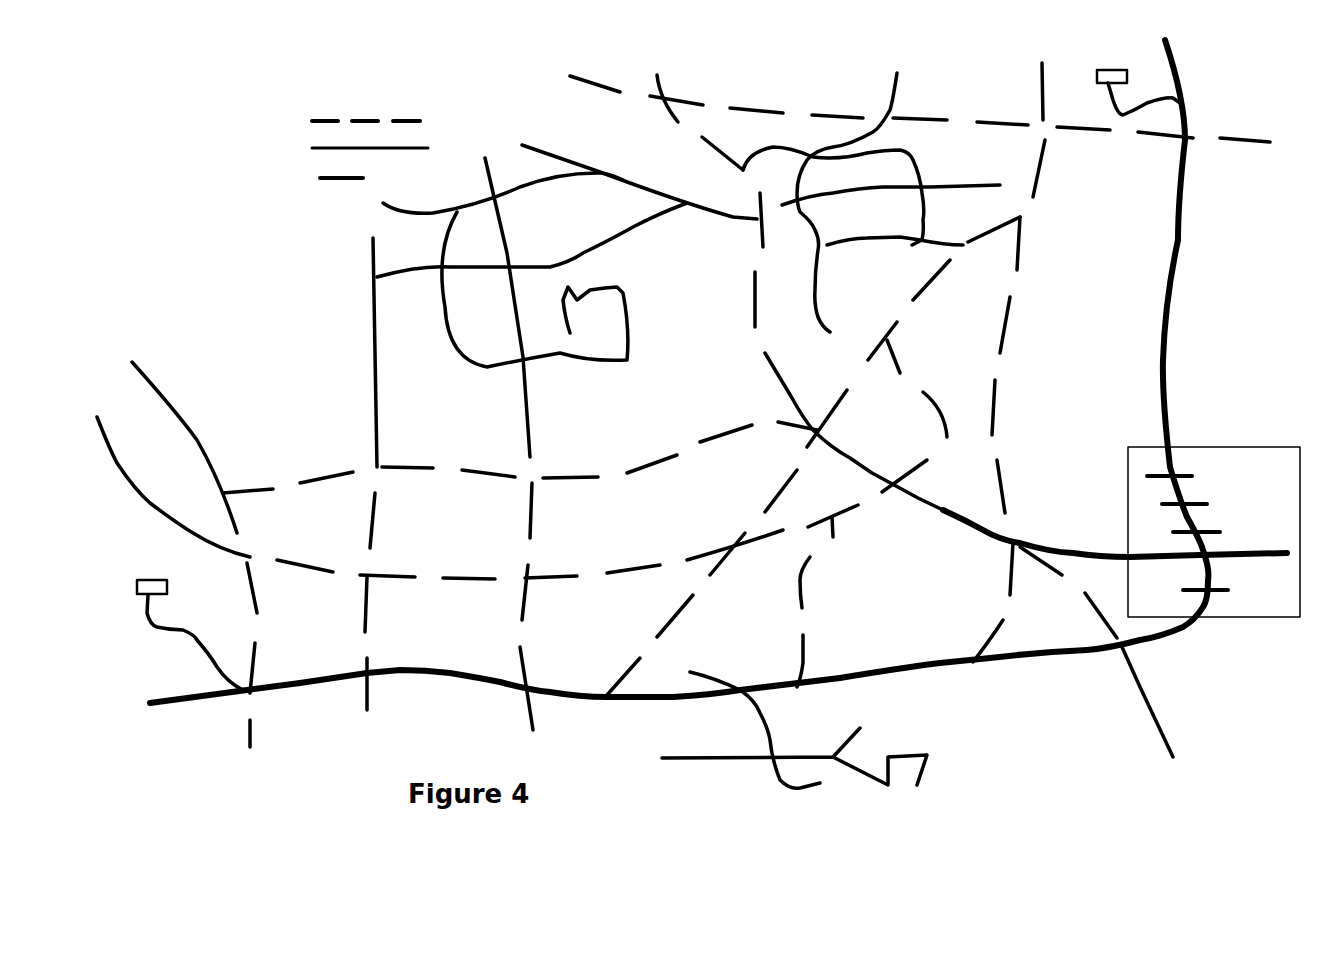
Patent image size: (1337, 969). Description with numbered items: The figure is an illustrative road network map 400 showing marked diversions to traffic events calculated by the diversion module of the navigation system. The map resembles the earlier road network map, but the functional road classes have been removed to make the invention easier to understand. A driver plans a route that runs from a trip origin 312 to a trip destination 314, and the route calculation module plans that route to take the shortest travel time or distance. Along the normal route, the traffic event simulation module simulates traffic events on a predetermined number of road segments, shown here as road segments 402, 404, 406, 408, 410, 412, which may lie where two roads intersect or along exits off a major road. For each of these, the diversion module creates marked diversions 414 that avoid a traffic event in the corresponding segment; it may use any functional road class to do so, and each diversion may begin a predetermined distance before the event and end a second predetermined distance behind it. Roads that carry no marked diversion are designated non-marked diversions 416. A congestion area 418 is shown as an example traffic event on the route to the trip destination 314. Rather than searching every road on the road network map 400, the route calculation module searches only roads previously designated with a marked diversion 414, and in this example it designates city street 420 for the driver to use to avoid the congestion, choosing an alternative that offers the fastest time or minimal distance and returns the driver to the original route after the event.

The road network map 400 is at (452, 97).
The trip origin 312 is at (167, 595).
The trip destination 314 is at (1103, 85).
The road segment 402 is at (282, 688).
The road segment 404 is at (413, 675).
The road segment 406 is at (572, 697).
The road segment 408 is at (683, 700).
The road segment 410 is at (895, 675).
The road segment 412 is at (1048, 655).
The marked diversions 414 is at (708, 393).
The non-marked diversions 416 is at (698, 348).
The congestion area 418 is at (1127, 447).
The city street 420 is at (997, 408).